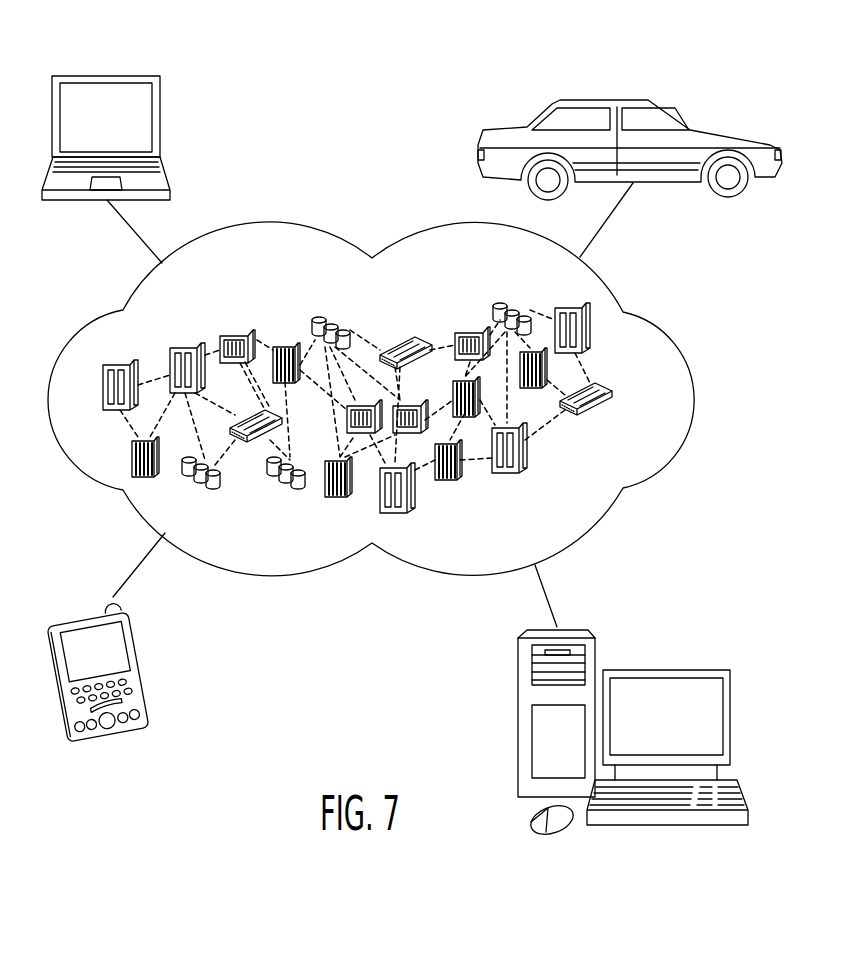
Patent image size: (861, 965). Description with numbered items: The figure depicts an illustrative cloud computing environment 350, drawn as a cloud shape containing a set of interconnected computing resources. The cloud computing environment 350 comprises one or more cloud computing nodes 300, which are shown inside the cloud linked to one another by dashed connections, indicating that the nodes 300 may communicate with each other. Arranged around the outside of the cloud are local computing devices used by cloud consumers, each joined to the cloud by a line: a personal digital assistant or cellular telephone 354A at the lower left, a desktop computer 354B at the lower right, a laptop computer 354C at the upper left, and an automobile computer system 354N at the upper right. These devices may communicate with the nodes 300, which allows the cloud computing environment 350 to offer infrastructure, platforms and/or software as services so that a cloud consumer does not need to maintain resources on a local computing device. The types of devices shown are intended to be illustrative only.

The laptop computer 354C is at (107, 75).
The automobile computer system 354N is at (612, 102).
The personal digital assistant (PDA) or cellular telephone 354A is at (88, 612).
The desktop computer 354B is at (667, 668).
The cloud computing environment 350 is at (678, 313).
The cloud computing nodes 300 is at (620, 398).